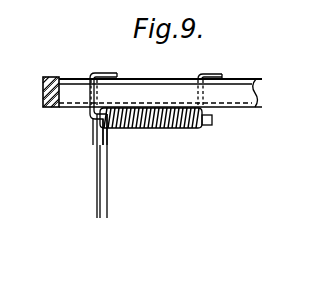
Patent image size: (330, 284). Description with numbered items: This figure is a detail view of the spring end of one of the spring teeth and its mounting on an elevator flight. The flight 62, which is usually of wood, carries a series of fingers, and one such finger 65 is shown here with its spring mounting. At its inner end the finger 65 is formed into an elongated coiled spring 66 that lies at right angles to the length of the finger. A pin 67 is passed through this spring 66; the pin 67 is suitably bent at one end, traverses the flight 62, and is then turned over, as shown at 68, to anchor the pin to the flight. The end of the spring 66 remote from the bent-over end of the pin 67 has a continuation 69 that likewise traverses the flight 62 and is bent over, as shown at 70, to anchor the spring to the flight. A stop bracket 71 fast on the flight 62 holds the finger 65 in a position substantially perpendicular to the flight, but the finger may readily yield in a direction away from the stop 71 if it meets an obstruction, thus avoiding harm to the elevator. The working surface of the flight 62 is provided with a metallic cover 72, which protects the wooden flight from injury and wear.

The flight 62 is at (263, 95).
The finger 65 is at (97, 181).
The coiled spring 66 is at (178, 128).
The pin 67 is at (212, 121).
The turned-over end of pin 68 is at (105, 73).
The continuation of spring 69 is at (197, 79).
The bent-over end of spring continuation 70 is at (214, 76).
The stop bracket 71 is at (112, 138).
The metallic cover 72 is at (77, 92).